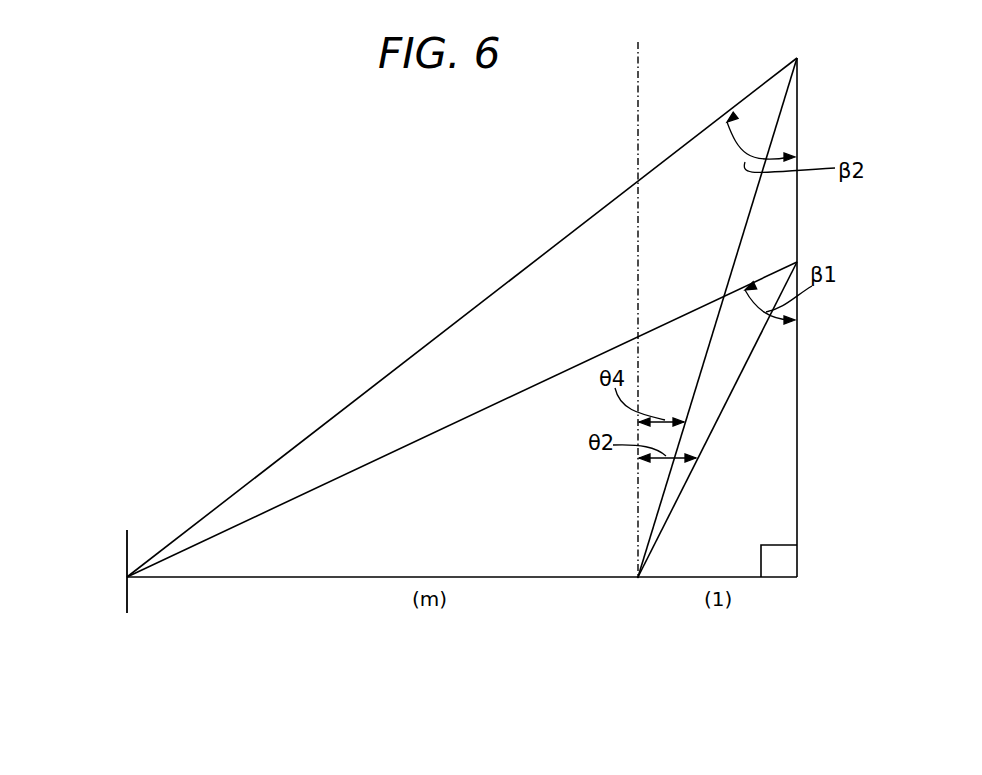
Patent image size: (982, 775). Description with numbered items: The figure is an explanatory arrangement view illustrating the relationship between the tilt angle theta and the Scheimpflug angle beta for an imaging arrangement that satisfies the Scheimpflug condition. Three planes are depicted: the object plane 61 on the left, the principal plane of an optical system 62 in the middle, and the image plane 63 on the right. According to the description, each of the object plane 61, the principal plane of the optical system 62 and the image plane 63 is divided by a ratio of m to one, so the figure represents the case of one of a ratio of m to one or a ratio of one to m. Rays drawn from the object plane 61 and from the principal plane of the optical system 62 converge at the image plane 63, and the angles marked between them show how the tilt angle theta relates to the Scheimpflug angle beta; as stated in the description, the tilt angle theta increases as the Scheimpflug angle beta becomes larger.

The object plane 61 is at (127, 598).
The principal plane of an optical system 62 is at (638, 579).
The image plane 63 is at (798, 470).